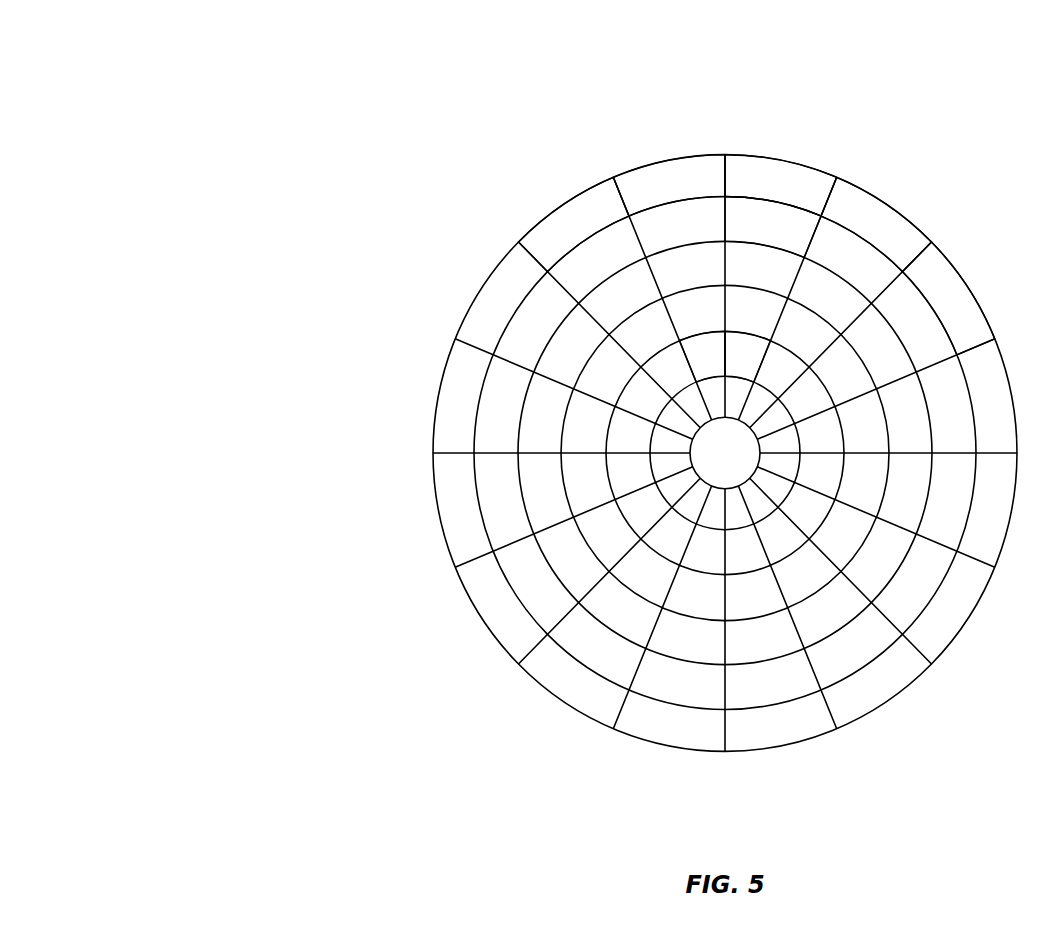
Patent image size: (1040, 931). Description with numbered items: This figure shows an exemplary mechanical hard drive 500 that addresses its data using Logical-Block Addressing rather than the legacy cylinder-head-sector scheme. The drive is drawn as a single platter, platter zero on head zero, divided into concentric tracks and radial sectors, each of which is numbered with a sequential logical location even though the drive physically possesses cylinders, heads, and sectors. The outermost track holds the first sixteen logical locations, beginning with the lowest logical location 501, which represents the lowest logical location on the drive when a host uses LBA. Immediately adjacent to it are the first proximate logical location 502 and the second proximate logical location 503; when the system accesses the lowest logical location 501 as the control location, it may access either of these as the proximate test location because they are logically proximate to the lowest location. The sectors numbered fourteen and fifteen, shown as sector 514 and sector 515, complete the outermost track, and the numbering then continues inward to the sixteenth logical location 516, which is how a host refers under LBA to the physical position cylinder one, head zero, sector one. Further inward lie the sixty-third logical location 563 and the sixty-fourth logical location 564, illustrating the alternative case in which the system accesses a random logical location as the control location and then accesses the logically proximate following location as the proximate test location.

The mechanical hard drive 500 is at (585, 420).
The logical location 0 501 is at (752, 175).
The logical location 1 502 is at (902, 238).
The logical location 2 503 is at (937, 270).
The sector 14 of track 0 514 is at (593, 207).
The sector 15 of track 0 515 is at (643, 187).
The logical location 16 516 is at (795, 227).
The logical location 63 563 is at (758, 347).
The logical location 64 564 is at (775, 350).